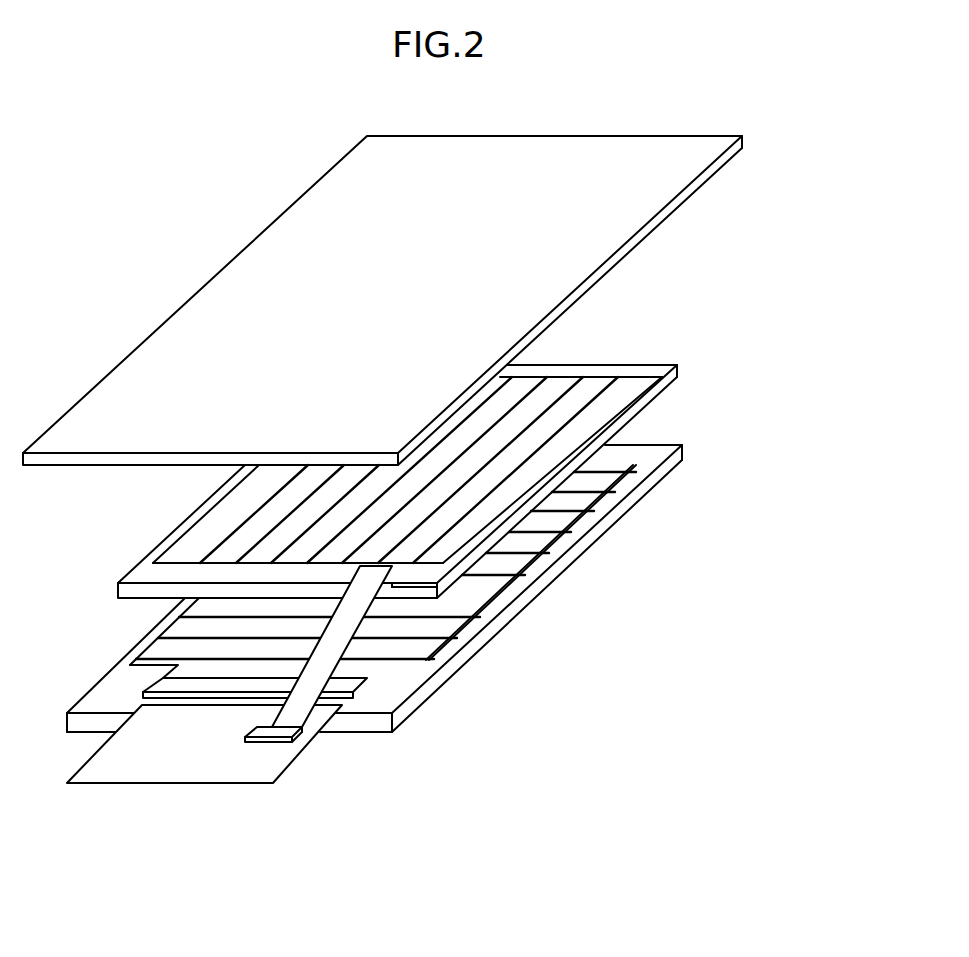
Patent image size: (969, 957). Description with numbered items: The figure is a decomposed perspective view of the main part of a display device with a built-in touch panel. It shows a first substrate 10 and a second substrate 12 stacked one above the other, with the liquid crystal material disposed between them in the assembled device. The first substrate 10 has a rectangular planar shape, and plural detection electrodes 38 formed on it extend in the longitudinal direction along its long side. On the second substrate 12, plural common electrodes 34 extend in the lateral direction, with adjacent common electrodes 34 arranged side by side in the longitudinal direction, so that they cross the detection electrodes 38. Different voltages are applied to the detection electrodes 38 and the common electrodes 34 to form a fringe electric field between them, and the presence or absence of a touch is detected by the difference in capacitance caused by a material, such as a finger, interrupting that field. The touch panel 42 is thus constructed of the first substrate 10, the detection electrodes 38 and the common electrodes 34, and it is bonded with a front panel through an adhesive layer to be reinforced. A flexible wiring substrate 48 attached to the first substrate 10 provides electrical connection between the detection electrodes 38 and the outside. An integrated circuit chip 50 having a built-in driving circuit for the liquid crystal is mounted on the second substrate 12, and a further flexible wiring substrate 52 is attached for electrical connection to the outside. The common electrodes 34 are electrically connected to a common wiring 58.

The first substrate 10 is at (678, 372).
The second substrate 12 is at (684, 452).
The common electrodes 34 is at (578, 502).
The detection electrodes 38 is at (584, 380).
The touch panel 42 is at (744, 140).
The flexible wiring substrate 48 is at (350, 625).
The integrated circuit chip 50 is at (353, 682).
The flexible wiring substrate 52 is at (230, 773).
The common wiring 58 is at (535, 575).